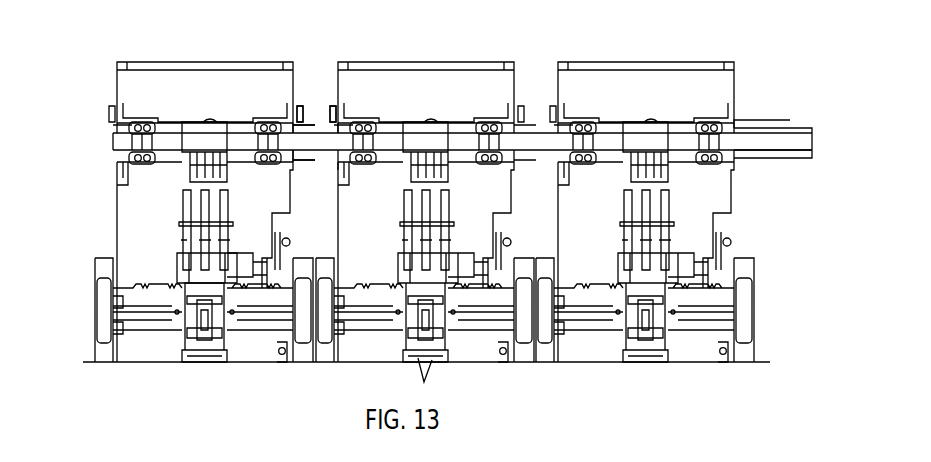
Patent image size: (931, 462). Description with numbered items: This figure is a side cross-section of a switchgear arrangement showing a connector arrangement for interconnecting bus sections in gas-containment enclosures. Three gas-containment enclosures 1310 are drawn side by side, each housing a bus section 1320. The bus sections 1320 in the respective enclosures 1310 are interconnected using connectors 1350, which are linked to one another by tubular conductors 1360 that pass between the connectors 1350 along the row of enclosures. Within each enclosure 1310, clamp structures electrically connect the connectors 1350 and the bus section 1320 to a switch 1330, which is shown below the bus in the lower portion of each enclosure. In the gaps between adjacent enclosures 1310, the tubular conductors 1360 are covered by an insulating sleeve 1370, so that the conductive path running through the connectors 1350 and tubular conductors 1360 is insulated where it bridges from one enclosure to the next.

The gas-containment enclosure 1310 is at (158, 65).
The bus section 1320 is at (210, 140).
The switch 1330 is at (183, 233).
The connector 1350 is at (367, 115).
The tubular conductor 1360 is at (318, 143).
The insulating sleeve 1370 is at (317, 158).